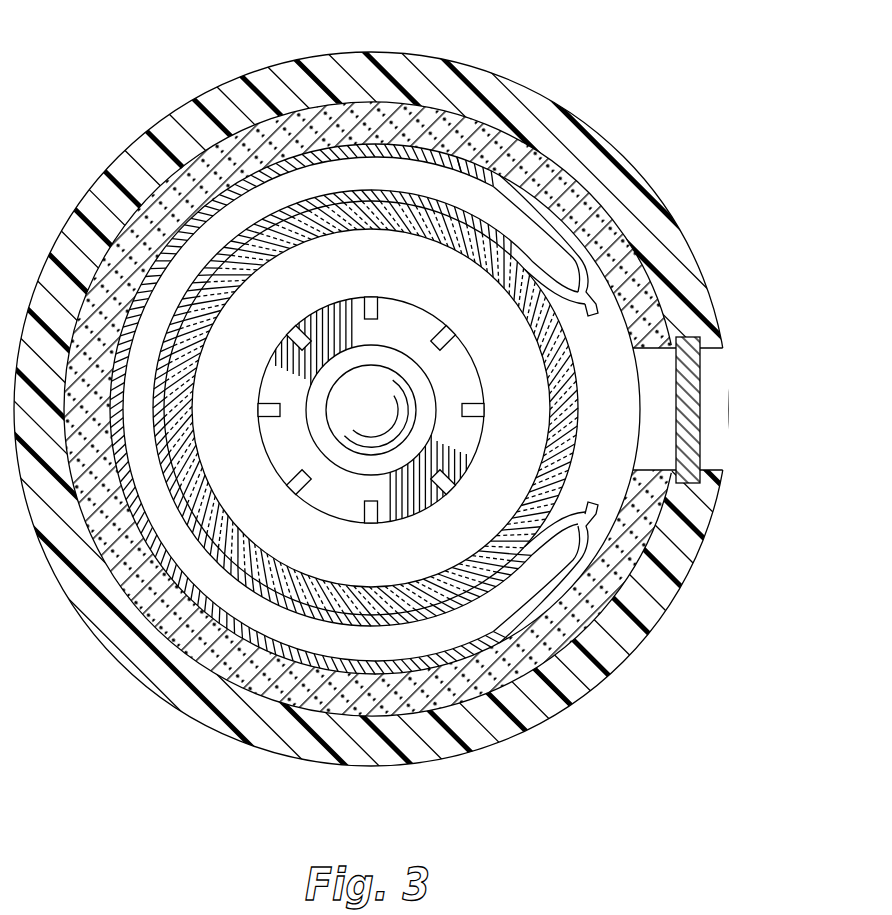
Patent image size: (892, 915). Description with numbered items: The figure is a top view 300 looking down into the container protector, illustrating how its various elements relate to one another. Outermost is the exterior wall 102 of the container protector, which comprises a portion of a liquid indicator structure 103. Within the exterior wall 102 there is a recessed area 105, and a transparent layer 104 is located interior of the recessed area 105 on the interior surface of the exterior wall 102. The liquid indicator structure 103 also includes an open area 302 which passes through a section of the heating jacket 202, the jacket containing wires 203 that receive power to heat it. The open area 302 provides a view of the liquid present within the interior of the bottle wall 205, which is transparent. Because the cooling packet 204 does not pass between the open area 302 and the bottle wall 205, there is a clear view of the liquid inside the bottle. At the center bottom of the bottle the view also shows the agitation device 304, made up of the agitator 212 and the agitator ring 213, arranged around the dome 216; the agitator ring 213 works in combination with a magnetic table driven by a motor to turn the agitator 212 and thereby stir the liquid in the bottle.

The top view 300 is at (105, 54).
The exterior wall 102 is at (660, 222).
The heating jacket 202 is at (493, 130).
The wires 203 is at (537, 163).
The cooling packet 204 is at (412, 177).
The bottle wall 205 is at (579, 410).
The agitator 212 is at (437, 335).
The agitator ring 213 is at (462, 374).
The dome 216 is at (371, 410).
The open area 302 is at (650, 400).
The agitation device 304 is at (266, 458).
The liquid indicator structure 103 is at (670, 442).
The transparent layer 104 is at (697, 373).
The recessed area 105 is at (717, 407).